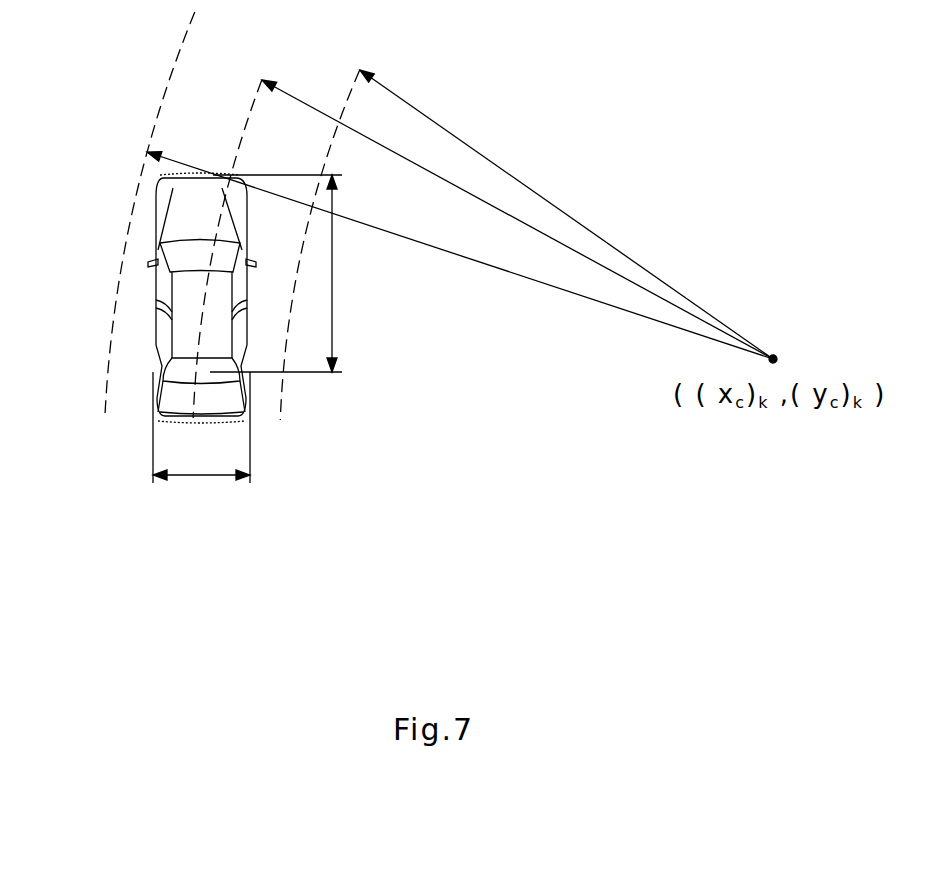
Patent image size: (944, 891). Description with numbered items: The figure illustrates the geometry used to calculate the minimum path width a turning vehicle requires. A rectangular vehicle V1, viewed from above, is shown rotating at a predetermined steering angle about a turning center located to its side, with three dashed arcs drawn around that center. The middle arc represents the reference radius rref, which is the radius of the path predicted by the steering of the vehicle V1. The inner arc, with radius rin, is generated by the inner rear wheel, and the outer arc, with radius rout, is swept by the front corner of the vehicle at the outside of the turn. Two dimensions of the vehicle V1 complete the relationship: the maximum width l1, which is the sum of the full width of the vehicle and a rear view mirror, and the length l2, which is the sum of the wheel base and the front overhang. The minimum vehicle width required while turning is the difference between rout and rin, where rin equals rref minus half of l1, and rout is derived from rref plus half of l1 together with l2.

The vehicle V1 is at (155, 338).
The maximum width of the vehicle l1 is at (201, 438).
The sum of wheel base and front overhang l2 is at (286, 273).
The inner radius rin is at (566, 214).
The reference radius rref is at (517, 219).
The outer radius rout is at (460, 255).